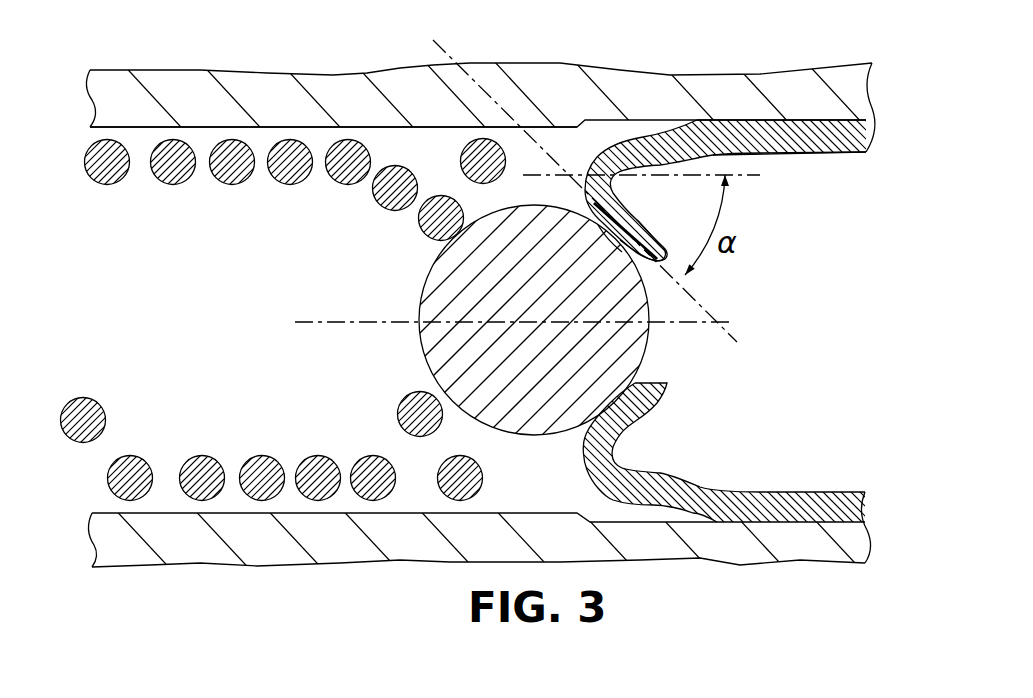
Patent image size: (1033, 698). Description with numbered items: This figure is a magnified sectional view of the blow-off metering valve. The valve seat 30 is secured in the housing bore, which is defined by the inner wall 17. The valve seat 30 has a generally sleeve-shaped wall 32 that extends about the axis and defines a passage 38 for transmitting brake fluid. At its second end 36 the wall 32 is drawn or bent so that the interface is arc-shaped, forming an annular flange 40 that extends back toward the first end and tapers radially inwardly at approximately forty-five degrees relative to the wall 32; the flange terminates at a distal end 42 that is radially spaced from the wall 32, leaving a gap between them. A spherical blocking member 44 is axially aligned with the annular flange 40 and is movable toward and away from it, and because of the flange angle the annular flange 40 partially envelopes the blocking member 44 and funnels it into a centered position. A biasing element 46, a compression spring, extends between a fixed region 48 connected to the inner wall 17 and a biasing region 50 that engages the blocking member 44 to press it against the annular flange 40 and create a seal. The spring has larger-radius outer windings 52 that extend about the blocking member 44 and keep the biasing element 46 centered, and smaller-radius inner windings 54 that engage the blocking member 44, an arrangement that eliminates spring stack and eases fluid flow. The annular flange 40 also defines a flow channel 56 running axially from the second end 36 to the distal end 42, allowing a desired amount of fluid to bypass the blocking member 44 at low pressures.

The inner wall 17 is at (212, 128).
The valve seat 30 is at (823, 110).
The sleeve-shaped wall 32 is at (750, 133).
The second end 36 is at (586, 168).
The passage 38 is at (758, 460).
The annular flange 40 is at (640, 228).
The distal end 42 is at (670, 266).
The blocking member 44 is at (470, 352).
The biasing element 46 is at (278, 515).
The fixed region 48 is at (108, 172).
The biasing region 50 is at (442, 195).
The outer windings 52 is at (201, 490).
The inner windings 54 is at (76, 428).
The flow channel 56 is at (604, 238).